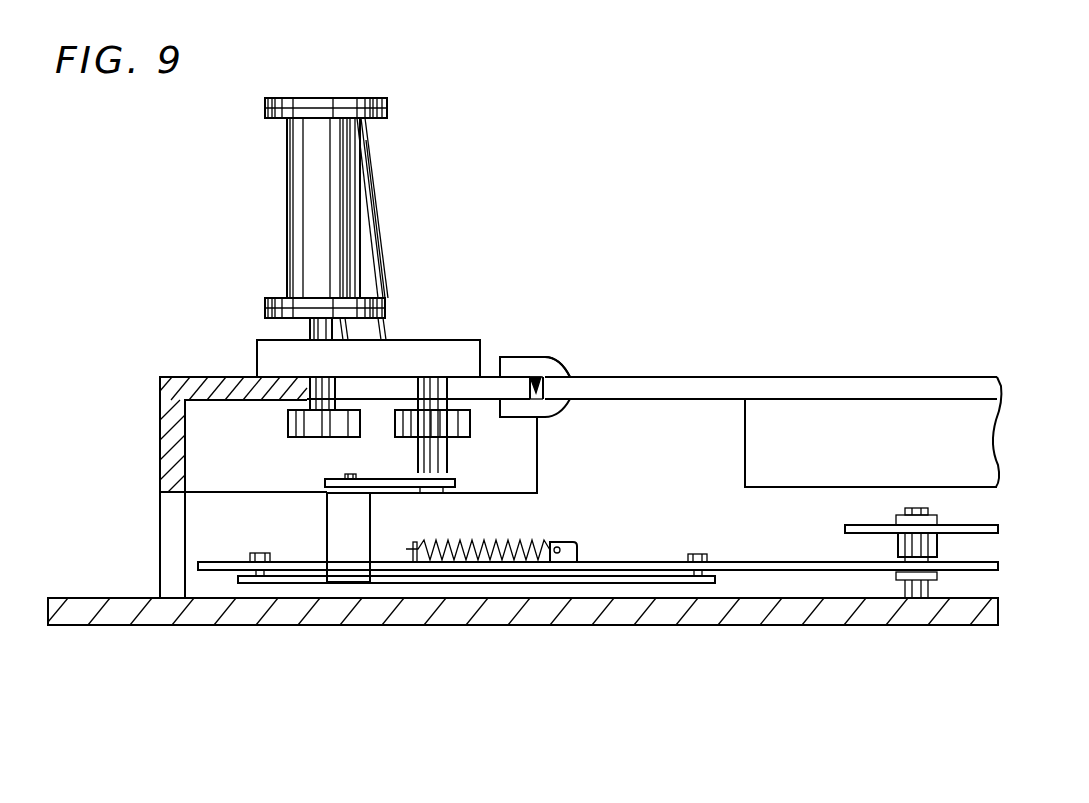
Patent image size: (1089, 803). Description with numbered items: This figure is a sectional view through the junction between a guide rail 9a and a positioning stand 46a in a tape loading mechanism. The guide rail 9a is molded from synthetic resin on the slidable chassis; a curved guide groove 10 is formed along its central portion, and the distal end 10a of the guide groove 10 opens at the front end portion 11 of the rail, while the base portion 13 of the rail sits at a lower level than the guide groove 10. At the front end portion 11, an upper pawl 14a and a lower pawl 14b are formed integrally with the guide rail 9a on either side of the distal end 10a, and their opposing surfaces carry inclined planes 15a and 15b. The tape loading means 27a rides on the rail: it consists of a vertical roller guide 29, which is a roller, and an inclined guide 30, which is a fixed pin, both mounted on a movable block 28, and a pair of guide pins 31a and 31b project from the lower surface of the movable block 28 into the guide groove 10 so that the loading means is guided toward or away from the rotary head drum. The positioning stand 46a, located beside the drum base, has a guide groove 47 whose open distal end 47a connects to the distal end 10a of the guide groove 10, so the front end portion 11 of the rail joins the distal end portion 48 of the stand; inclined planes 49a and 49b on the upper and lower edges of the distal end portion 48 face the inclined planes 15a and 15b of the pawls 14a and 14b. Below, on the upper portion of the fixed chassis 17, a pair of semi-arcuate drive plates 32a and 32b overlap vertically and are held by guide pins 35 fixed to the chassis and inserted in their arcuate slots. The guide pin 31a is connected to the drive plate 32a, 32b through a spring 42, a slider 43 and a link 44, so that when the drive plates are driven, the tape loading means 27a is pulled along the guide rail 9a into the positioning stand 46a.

The guide rail 9a is at (787, 367).
The guide groove 10 is at (892, 386).
The distal end of guide groove 10a is at (548, 396).
The front end portion of guide rail 11 is at (614, 378).
The base portion of guide rail 13 is at (968, 455).
The upper pawl 14a is at (527, 357).
The lower pawl 14b is at (538, 432).
The inclined plane of upper pawl 15a is at (493, 374).
The inclined plane of lower pawl 15b is at (508, 403).
The fixed chassis 17 is at (975, 615).
The tape loading means 27a is at (437, 130).
The movable block 28 is at (262, 362).
The vertical roller guide 29 is at (333, 130).
The inclined guide 30 is at (366, 248).
The guide pin 31a is at (432, 456).
The guide pin 31b is at (318, 386).
The drive plate 32a is at (795, 570).
The drive plate 32b is at (985, 530).
The guide pin 35 is at (913, 592).
The spring 42 is at (498, 558).
The slider 43 is at (460, 583).
The link 44 is at (392, 480).
The positioning stand 46a is at (168, 390).
The guide groove of positioning stand 47 is at (388, 386).
The distal end of positioning stand guide groove 47a is at (517, 384).
The distal end portion of positioning stand 48 is at (507, 385).
The inclined plane 49a is at (540, 385).
The inclined plane 49b is at (550, 392).